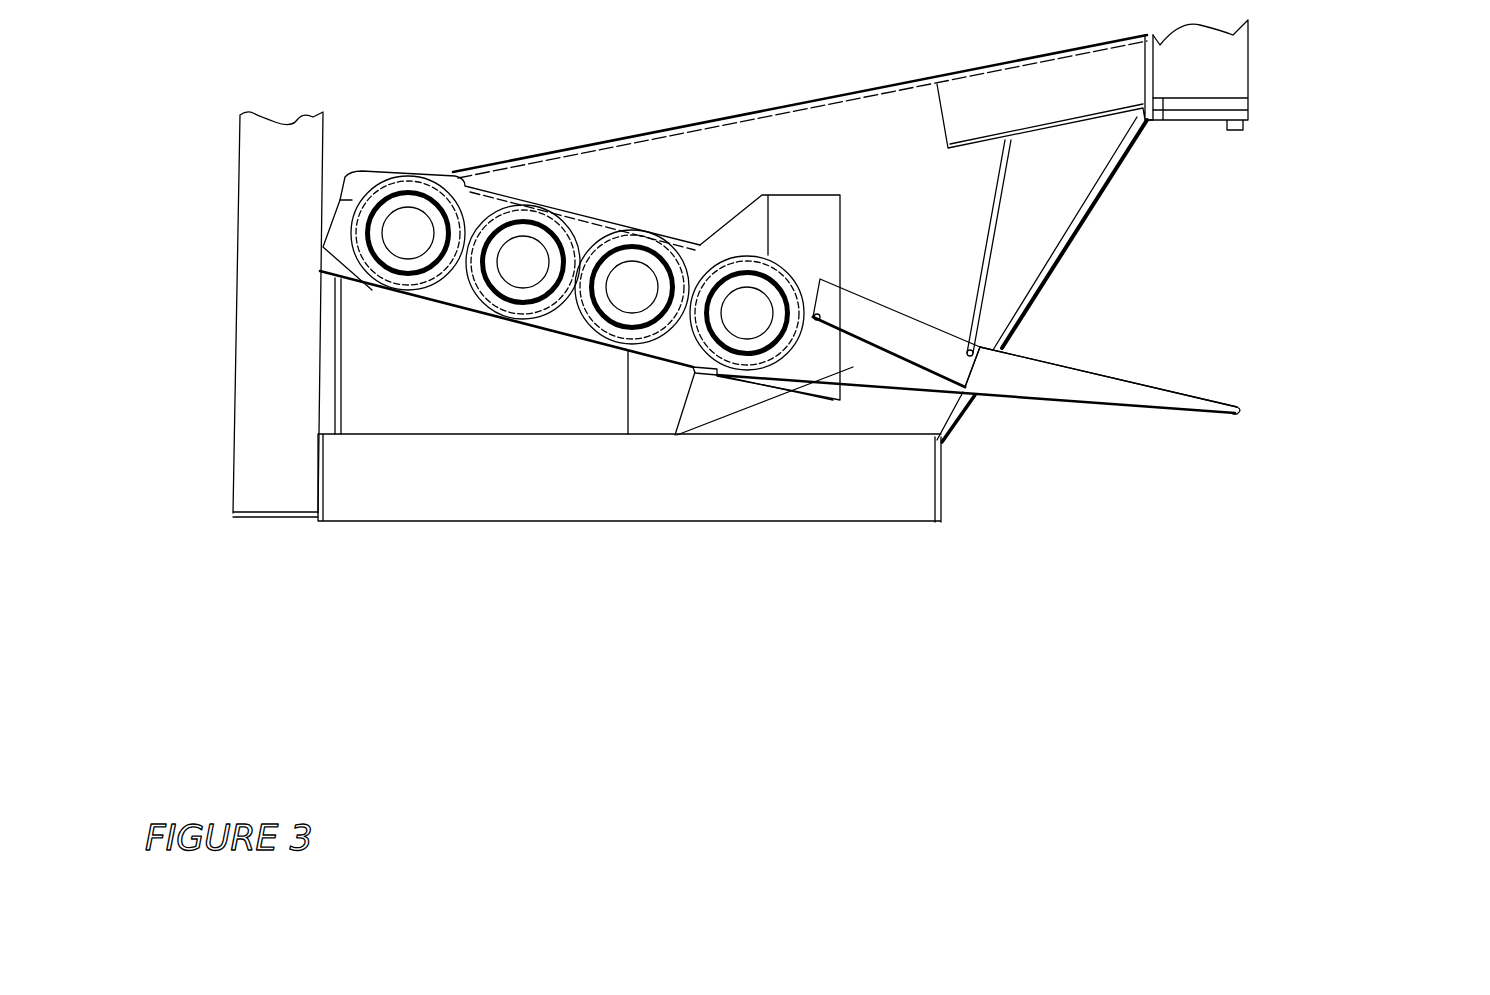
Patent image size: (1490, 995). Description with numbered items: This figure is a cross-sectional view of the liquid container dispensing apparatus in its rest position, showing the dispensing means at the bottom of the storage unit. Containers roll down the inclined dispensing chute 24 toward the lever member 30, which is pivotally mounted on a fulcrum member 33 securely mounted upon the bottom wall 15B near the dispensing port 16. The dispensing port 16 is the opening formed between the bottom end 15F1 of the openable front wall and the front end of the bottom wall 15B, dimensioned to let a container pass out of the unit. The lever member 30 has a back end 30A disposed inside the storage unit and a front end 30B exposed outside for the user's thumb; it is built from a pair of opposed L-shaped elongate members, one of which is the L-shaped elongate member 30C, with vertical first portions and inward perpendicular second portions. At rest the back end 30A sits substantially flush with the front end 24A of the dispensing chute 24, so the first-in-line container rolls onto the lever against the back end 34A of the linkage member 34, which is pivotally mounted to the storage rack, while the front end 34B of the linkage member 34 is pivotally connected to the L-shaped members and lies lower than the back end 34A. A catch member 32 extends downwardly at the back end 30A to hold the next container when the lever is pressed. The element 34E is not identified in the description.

The dispensing chute 24 is at (467, 396).
The front end of dispensing chute 24A is at (514, 499).
The catch member 32 is at (506, 537).
The back end of lever member 30A is at (580, 563).
The bottom wall 15B is at (629, 552).
The link 34E is at (715, 546).
The linkage member 34 is at (799, 532).
The back end of linkage member 34A is at (712, 225).
The front end of linkage member 34B is at (794, 599).
The front end of lever member 30B is at (1084, 484).
The lever member 30 is at (1160, 518).
The L-shaped elongate member 30C is at (1155, 547).
The fulcrum member 33 is at (1119, 603).
The dispensing port 16 is at (1219, 233).
The bottom end of front wall 15F1 is at (1306, 139).